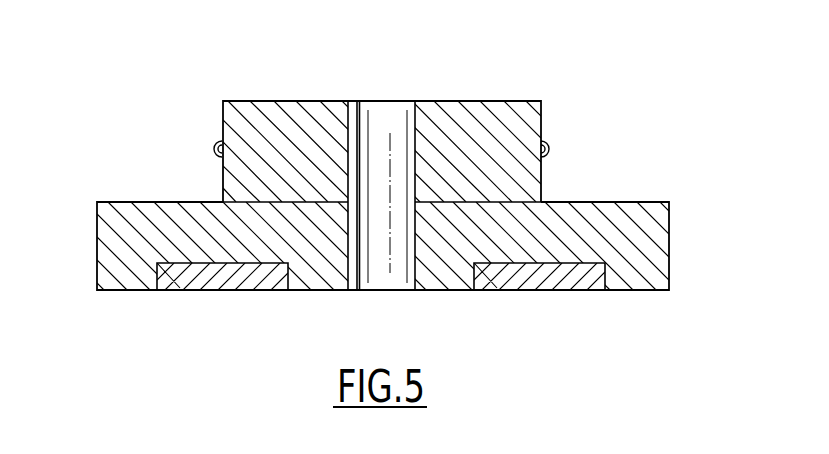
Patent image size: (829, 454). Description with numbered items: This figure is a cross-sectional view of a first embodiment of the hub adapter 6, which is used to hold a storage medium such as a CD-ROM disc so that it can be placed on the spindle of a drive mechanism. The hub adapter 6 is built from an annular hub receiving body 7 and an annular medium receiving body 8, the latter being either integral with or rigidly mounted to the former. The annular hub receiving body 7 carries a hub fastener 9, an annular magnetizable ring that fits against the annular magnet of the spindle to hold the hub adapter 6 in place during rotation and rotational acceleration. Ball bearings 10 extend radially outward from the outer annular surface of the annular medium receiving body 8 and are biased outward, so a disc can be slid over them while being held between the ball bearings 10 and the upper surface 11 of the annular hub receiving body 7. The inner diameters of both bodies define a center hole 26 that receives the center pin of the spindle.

The hub adapter 6 is at (640, 73).
The annular hub receiving body 7 is at (97, 228).
The annular medium receiving body 8 is at (222, 118).
The hub fastener 9 is at (245, 292).
The ball bearings 10 is at (212, 145).
The upper surface 11 is at (160, 201).
The center hole 26 is at (385, 110).